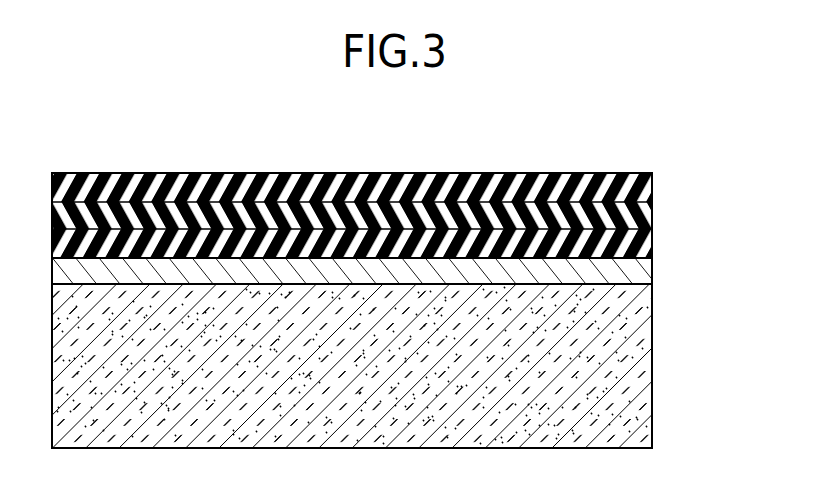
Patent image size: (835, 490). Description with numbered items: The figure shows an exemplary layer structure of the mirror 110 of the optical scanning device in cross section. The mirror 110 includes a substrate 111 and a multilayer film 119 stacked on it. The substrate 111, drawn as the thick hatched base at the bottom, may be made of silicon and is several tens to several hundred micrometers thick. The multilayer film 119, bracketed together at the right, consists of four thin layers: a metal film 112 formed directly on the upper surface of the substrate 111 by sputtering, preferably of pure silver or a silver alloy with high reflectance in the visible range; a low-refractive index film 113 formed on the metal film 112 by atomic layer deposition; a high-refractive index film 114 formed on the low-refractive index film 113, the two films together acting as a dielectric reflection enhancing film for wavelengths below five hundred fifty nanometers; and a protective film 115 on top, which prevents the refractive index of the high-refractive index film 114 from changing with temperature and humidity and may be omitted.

The mirror 110 is at (74, 133).
The substrate 111 is at (637, 365).
The metal film 112 is at (637, 268).
The low-refractive index film 113 is at (637, 239).
The high-refractive index film 114 is at (637, 212).
The protective film 115 is at (637, 185).
The multilayer film 119 is at (742, 170).